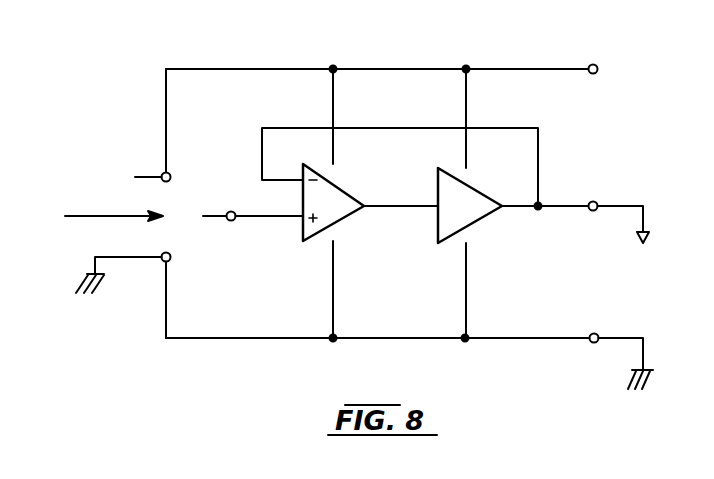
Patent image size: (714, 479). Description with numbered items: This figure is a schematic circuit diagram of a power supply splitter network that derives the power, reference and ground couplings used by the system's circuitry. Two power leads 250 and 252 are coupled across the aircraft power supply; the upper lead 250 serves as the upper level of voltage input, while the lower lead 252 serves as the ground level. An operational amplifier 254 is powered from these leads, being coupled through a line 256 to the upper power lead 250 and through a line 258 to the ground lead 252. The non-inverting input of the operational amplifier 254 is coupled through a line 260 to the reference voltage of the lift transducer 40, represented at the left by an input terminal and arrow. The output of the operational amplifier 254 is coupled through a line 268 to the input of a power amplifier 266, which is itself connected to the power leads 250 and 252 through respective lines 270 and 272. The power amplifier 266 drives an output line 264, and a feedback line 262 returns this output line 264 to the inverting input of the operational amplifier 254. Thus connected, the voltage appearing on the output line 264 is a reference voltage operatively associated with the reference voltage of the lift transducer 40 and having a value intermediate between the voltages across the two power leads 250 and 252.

The lift transducer 40 is at (98, 216).
The power lead 250 is at (384, 69).
The power lead 252 is at (234, 338).
The operational amplifier 254 is at (348, 192).
The line 256 is at (333, 94).
The line 258 is at (333, 282).
The line 260 is at (275, 217).
The line 262 is at (296, 128).
The output line 264 is at (568, 206).
The power amplifier 266 is at (483, 194).
The line 268 is at (380, 206).
The line 270 is at (466, 94).
The line 272 is at (466, 275).